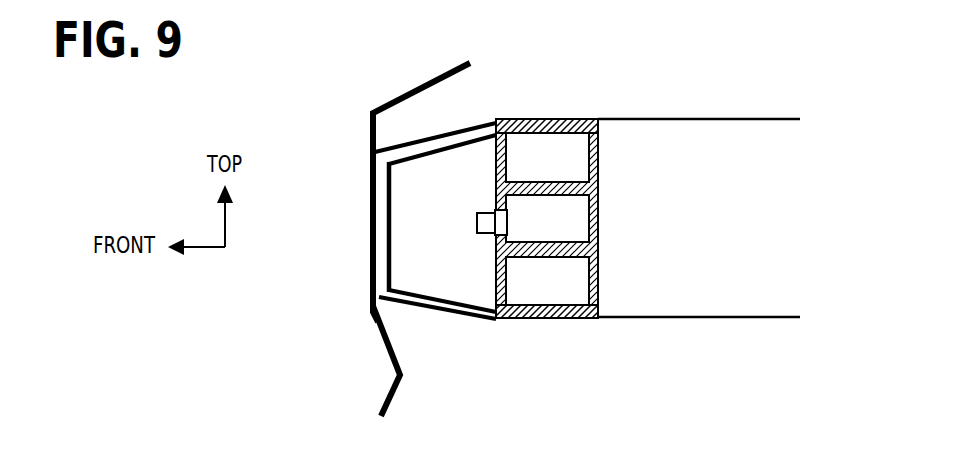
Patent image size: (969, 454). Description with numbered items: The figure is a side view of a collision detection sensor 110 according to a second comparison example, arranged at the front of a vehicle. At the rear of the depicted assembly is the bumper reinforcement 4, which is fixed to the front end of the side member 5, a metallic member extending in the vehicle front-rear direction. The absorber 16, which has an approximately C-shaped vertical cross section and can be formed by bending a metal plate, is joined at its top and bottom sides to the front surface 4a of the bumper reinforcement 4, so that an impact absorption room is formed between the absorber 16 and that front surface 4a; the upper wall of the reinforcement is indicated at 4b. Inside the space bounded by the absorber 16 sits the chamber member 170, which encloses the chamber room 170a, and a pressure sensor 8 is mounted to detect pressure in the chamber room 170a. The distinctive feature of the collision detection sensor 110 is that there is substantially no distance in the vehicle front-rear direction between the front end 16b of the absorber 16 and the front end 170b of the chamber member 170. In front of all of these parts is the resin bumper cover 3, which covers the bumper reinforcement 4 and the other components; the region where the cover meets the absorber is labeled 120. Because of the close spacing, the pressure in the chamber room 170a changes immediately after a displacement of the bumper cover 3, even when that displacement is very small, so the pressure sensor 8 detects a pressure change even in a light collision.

The collision detection sensor 110 is at (309, 98).
The housing structure 120 is at (328, 162).
The absorber 16 is at (437, 310).
The front end of the absorber 16b is at (378, 322).
The bumper cover 3 is at (387, 355).
The chamber member 170 is at (372, 272).
The chamber room 170a is at (402, 220).
The front end of the chamber member 170b is at (370, 188).
The bumper reinforcement 4 is at (565, 112).
The front surface of the bumper reinforcement 4a is at (490, 320).
The top wall of support member 4b is at (525, 120).
The pressure sensor 8 is at (486, 210).
The side member 5 is at (773, 118).